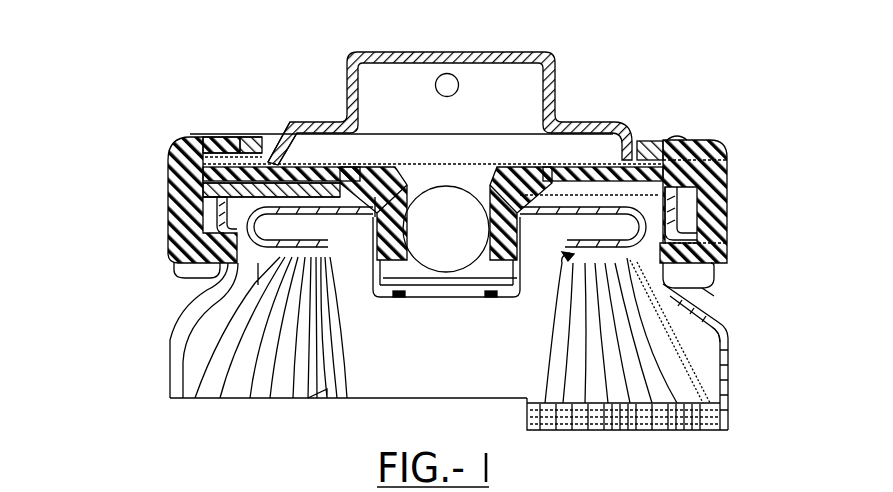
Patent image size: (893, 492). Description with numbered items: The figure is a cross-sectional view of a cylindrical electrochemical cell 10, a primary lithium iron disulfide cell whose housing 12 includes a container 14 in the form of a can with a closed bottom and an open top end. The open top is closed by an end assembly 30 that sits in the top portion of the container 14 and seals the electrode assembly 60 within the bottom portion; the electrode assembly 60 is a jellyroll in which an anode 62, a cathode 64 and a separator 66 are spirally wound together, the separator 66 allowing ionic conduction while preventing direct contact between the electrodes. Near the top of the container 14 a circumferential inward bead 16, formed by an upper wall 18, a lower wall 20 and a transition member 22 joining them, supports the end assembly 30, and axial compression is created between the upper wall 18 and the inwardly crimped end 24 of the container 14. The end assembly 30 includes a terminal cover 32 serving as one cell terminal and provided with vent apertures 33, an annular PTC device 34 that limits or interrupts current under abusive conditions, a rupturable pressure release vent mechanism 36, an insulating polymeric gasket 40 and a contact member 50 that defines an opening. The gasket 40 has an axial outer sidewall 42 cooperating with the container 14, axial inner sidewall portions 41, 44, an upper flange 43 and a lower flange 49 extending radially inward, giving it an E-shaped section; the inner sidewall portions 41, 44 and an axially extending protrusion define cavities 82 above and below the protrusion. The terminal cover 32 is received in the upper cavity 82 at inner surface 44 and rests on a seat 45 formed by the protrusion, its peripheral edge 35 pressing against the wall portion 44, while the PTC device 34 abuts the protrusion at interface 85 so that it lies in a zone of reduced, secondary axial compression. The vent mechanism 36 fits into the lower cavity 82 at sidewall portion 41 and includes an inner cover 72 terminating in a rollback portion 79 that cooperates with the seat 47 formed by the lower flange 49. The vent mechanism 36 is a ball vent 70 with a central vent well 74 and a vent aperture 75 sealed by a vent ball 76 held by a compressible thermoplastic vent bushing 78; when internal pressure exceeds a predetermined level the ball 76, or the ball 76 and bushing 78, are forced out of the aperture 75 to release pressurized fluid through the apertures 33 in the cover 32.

The electrochemical cell 10 is at (150, 92).
The housing 12 is at (748, 197).
The container 14 is at (730, 370).
The bead 16 is at (730, 286).
The upper wall 18 is at (716, 272).
The lower wall 20 is at (728, 323).
The transition member 22 is at (672, 286).
The crimped end 24 is at (690, 139).
The end assembly 30 is at (450, 84).
The terminal cover 32 is at (531, 52).
The vent apertures 33 is at (450, 73).
The PTC device 34 is at (343, 166).
The peripheral edge 35 is at (680, 139).
The pressure release vent mechanism 36 is at (372, 282).
The gasket 40 is at (167, 177).
The axial inner sidewall portion 41 is at (269, 215).
The axial outer sidewall 42 is at (175, 198).
The upper flange 43 is at (232, 134).
The axial inner sidewall portion 44 is at (178, 150).
The seat 45 is at (170, 160).
The seat 47 is at (170, 230).
The lower flange 49 is at (193, 288).
The contact member 50 is at (556, 299).
The electrode assembly 60 is at (530, 376).
The anode 62 is at (553, 431).
The cathode 64 is at (618, 431).
The separator 66 is at (680, 431).
The ball vent 70 is at (446, 213).
The inner cover 72 is at (600, 221).
The central vent well 74 is at (396, 298).
The vent aperture 75 is at (498, 298).
The vent ball 76 is at (446, 229).
The vent bushing 78 is at (520, 166).
The rollback portion 79 is at (725, 212).
The cavities 82 is at (715, 183).
The interface 85 is at (250, 163).